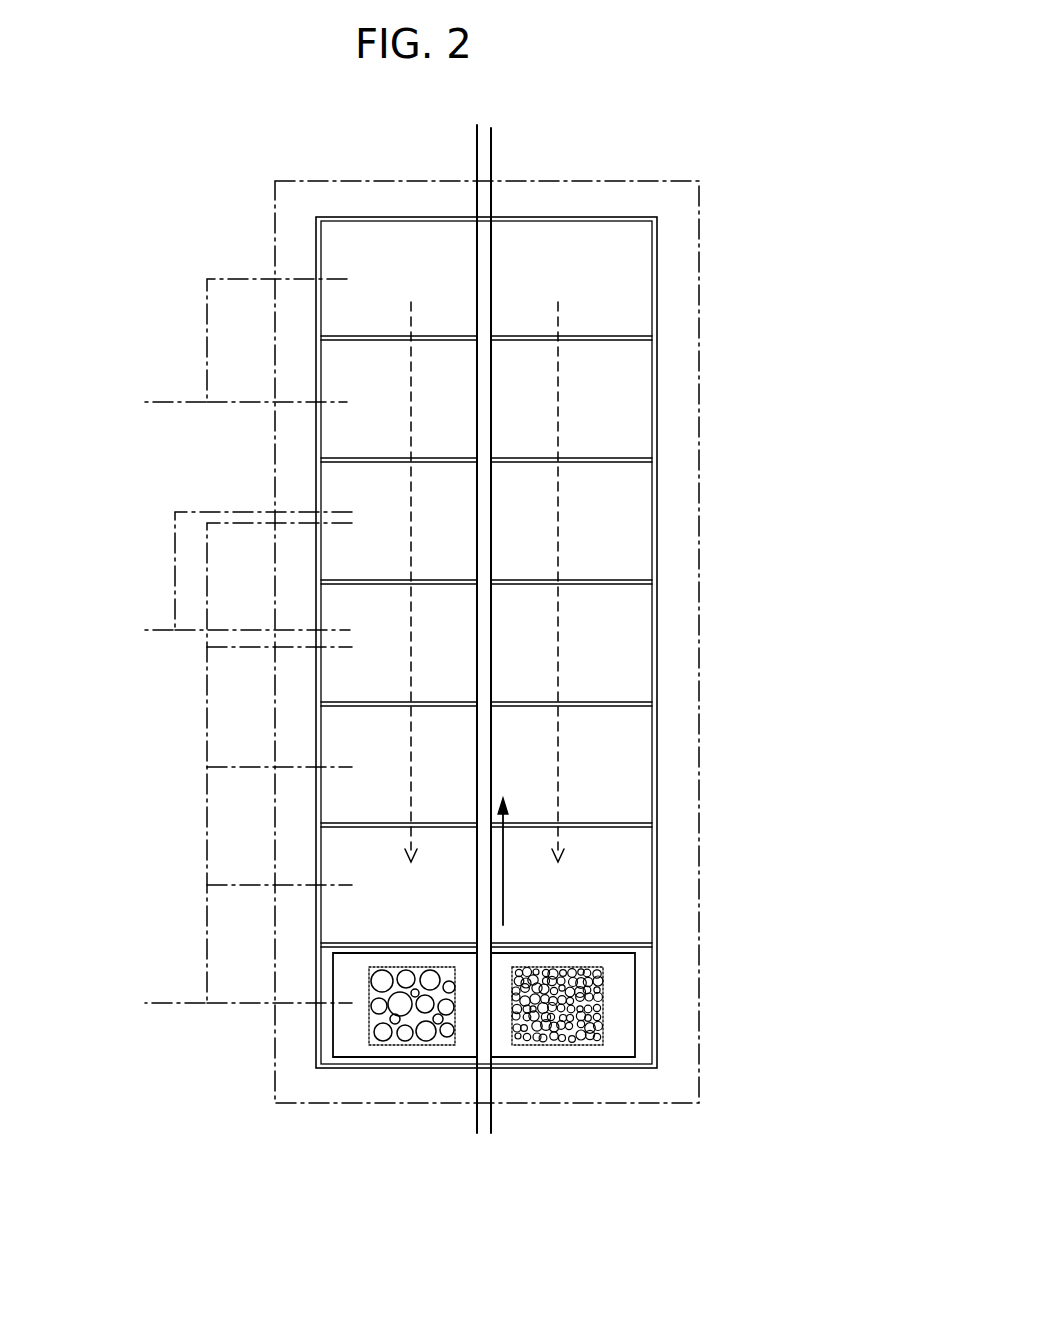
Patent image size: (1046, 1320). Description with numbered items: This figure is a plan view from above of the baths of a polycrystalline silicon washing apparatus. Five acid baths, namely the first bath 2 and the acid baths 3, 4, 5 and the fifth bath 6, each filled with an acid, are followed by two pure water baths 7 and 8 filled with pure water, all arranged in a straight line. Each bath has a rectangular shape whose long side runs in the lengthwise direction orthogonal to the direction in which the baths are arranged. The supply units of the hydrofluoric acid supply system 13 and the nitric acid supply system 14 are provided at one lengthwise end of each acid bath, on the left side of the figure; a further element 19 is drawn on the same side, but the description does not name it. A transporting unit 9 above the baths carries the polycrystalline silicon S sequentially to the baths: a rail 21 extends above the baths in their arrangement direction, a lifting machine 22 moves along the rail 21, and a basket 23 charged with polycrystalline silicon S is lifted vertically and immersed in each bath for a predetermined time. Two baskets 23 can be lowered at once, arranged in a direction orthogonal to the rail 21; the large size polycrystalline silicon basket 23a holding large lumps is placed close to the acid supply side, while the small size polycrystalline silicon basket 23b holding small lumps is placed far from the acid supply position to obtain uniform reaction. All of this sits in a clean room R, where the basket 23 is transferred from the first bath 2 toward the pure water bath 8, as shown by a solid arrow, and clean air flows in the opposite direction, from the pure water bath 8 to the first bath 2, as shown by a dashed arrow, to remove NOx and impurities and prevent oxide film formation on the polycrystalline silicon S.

The first bath 2 is at (667, 1025).
The acid bath 3 is at (668, 888).
The acid bath 4 is at (668, 770).
The acid bath 5 is at (668, 658).
The fifth bath 6 is at (670, 520).
The pure water bath 7 is at (670, 399).
The pure water bath 8 is at (670, 277).
The transporting unit 9 is at (639, 978).
The hydrofluoric acid supply system 13 is at (203, 932).
The nitric acid supply system 14 is at (175, 552).
The first zone 19 is at (207, 335).
The rail 21 is at (487, 252).
The lifting machine 22 is at (615, 1057).
The basket 23 is at (580, 1147).
The large size polycrystalline silicon basket 23a is at (417, 1045).
The small size polycrystalline silicon basket 23b is at (545, 1045).
The clean room R is at (270, 1057).
The polycrystalline silicon S is at (382, 1047).